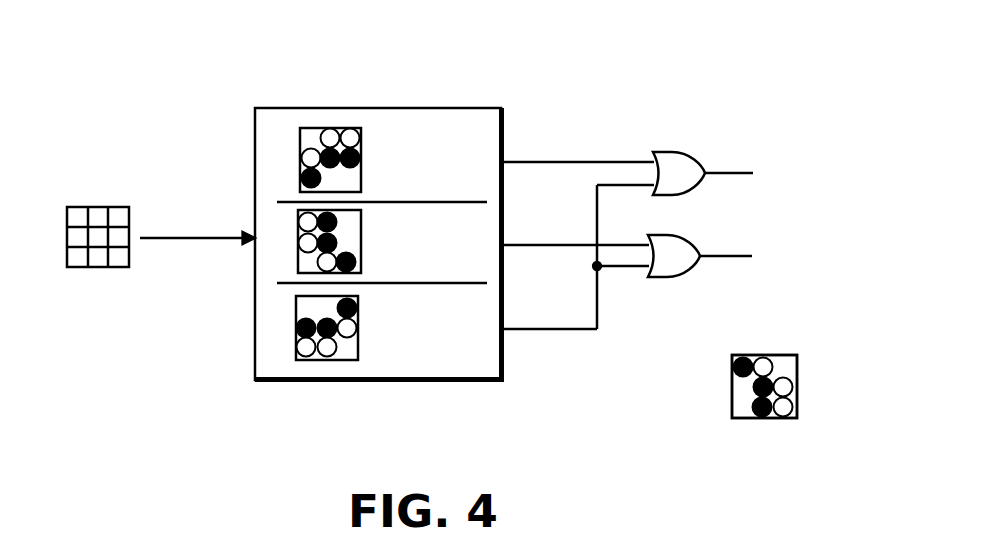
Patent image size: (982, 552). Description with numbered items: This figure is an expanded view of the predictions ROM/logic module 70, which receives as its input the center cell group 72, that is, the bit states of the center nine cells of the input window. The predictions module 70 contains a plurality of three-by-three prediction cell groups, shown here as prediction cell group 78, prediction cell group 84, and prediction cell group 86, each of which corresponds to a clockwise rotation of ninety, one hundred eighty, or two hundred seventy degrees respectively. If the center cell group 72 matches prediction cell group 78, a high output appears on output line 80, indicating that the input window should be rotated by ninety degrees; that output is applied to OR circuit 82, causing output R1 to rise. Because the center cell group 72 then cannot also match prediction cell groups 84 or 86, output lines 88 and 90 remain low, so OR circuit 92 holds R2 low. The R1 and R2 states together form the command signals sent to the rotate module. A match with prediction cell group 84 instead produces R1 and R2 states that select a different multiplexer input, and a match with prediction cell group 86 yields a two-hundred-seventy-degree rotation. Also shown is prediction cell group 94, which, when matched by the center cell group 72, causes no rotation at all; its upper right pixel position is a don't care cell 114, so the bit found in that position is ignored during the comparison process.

The predictions ROM/logic module 70 is at (393, 108).
The center cell group 72 is at (103, 207).
The prediction cell group 78 is at (300, 148).
The output line 80 is at (587, 162).
The OR circuit 82 is at (665, 153).
The prediction cell group 84 is at (298, 247).
The prediction cell group 86 is at (296, 330).
The output line 88 is at (622, 245).
The output line 90 is at (587, 329).
The OR circuit 92 is at (688, 270).
The prediction cell group 94 is at (770, 417).
The don't care cell 114 is at (790, 365).